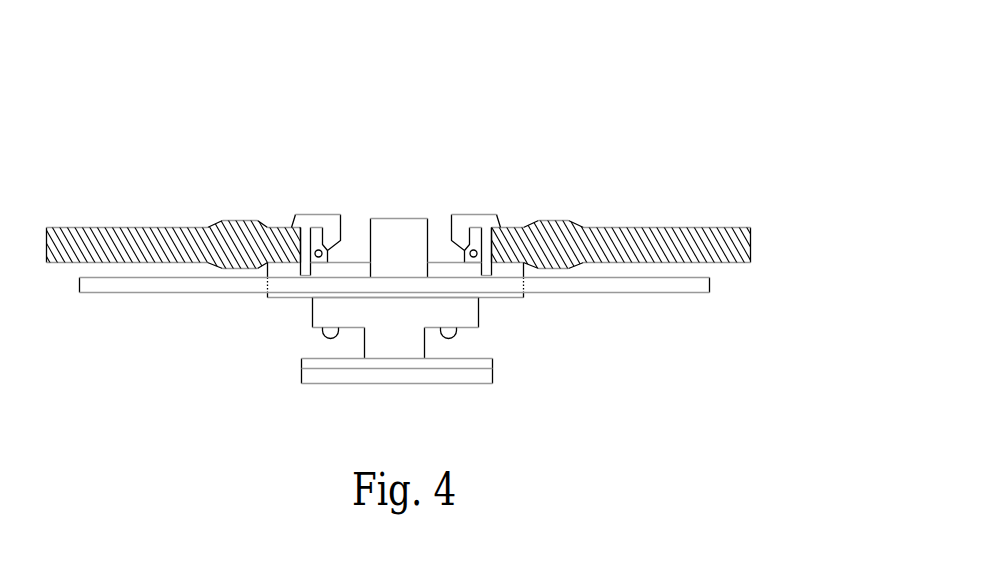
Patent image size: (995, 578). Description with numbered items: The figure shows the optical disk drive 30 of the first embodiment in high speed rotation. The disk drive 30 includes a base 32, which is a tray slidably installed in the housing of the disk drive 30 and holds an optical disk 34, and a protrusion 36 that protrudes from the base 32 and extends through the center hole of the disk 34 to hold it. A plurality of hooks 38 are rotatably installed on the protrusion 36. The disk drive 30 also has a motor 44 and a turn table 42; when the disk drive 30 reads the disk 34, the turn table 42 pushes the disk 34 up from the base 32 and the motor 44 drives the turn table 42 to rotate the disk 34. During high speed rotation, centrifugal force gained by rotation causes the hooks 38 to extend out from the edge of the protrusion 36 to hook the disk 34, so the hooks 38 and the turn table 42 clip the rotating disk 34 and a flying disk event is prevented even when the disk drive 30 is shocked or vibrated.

The optical disk drive 30 is at (863, 34).
The base 32 is at (703, 284).
The optical disk 34 is at (708, 214).
The protrusion 36 is at (473, 188).
The hooks 38 is at (308, 211).
The turn table 42 is at (470, 314).
The motor 44 is at (492, 368).